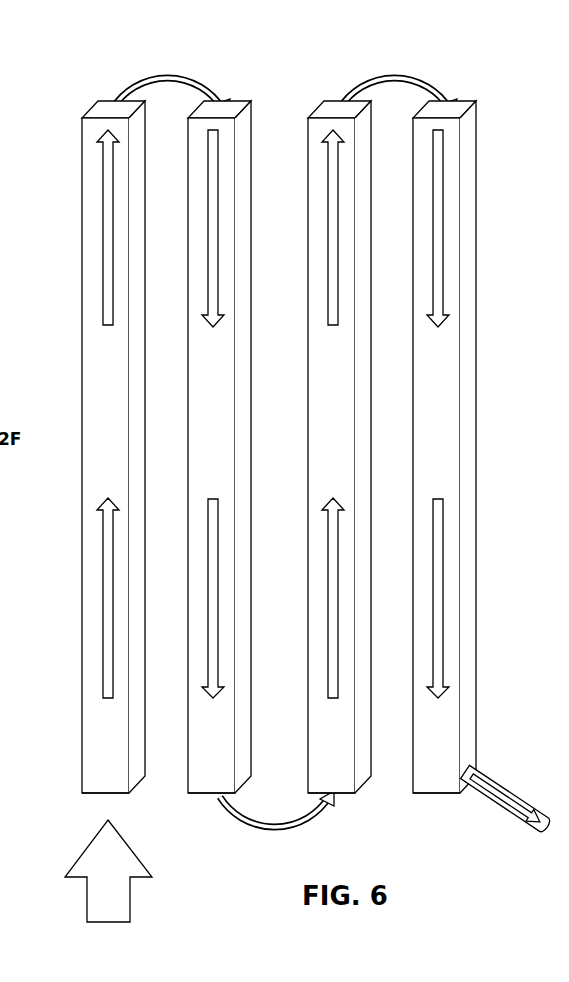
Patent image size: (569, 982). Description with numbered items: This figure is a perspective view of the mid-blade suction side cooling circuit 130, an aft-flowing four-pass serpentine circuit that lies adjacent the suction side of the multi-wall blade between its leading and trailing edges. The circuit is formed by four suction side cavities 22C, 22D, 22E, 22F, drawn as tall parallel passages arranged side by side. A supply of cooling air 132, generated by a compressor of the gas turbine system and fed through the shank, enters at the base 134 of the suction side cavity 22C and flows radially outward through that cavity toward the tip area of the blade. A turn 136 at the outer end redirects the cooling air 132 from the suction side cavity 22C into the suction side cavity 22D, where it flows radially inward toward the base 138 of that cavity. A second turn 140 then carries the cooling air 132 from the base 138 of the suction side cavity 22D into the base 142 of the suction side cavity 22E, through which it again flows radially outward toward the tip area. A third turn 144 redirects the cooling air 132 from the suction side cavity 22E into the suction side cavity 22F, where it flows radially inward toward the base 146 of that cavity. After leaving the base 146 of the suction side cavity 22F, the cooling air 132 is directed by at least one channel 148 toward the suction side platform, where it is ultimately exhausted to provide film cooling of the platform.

The mid-blade suction side cooling circuit 130 is at (77, 65).
The cooling air 132 is at (108, 871).
The base of suction side cavity 22C 134 is at (90, 795).
The turn 136 is at (216, 93).
The base of suction side cavity 22D 138 is at (198, 795).
The turn 140 is at (269, 831).
The base of suction side cavity 22E 142 is at (347, 795).
The turn 144 is at (443, 93).
The base of suction side cavity 22F 146 is at (432, 795).
The channel 148 is at (503, 786).
The suction side cavity 22C is at (113, 447).
The suction side cavity 22D is at (219, 447).
The suction side cavity 22E is at (339, 447).
The suction side cavity 22F is at (444, 447).